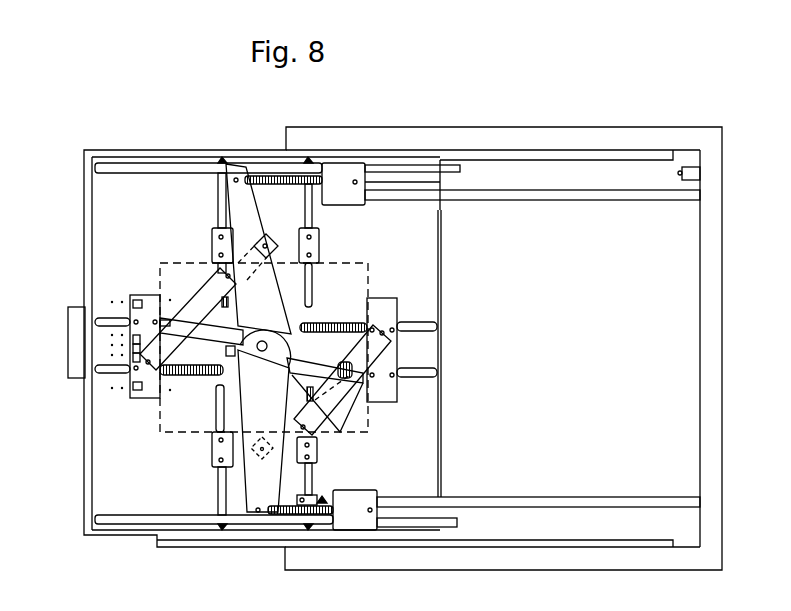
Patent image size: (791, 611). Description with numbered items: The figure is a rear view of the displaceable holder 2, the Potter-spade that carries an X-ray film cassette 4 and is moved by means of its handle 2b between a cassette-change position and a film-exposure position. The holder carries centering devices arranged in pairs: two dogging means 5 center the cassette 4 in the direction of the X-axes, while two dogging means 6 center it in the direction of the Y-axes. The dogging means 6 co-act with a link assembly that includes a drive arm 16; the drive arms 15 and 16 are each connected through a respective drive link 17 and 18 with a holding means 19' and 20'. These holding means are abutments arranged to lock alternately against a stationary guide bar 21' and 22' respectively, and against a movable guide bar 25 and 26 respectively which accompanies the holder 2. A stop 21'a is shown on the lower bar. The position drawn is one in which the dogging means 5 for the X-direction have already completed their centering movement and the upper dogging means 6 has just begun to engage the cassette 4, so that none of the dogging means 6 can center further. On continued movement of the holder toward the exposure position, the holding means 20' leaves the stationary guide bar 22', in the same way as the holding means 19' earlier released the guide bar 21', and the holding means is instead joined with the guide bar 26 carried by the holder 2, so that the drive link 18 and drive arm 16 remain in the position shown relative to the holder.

The displaceable holder 2 is at (134, 265).
The handle 2b is at (76, 370).
The cassette 4 is at (355, 268).
The dogging means 5 is at (142, 302).
The dogging means 6 is at (318, 246).
The drive arm 15 is at (257, 396).
The drive arm 16 is at (238, 207).
The drive link 17 is at (280, 514).
The drive link 18 is at (268, 190).
The holding means 19' is at (395, 494).
The holding means 20' is at (391, 147).
The stationary guide bar 21' is at (538, 481).
The stop 21'a is at (341, 477).
The stationary guide bar 22' is at (532, 215).
The movable guide bar 25 is at (143, 520).
The movable guide bar 26 is at (133, 168).